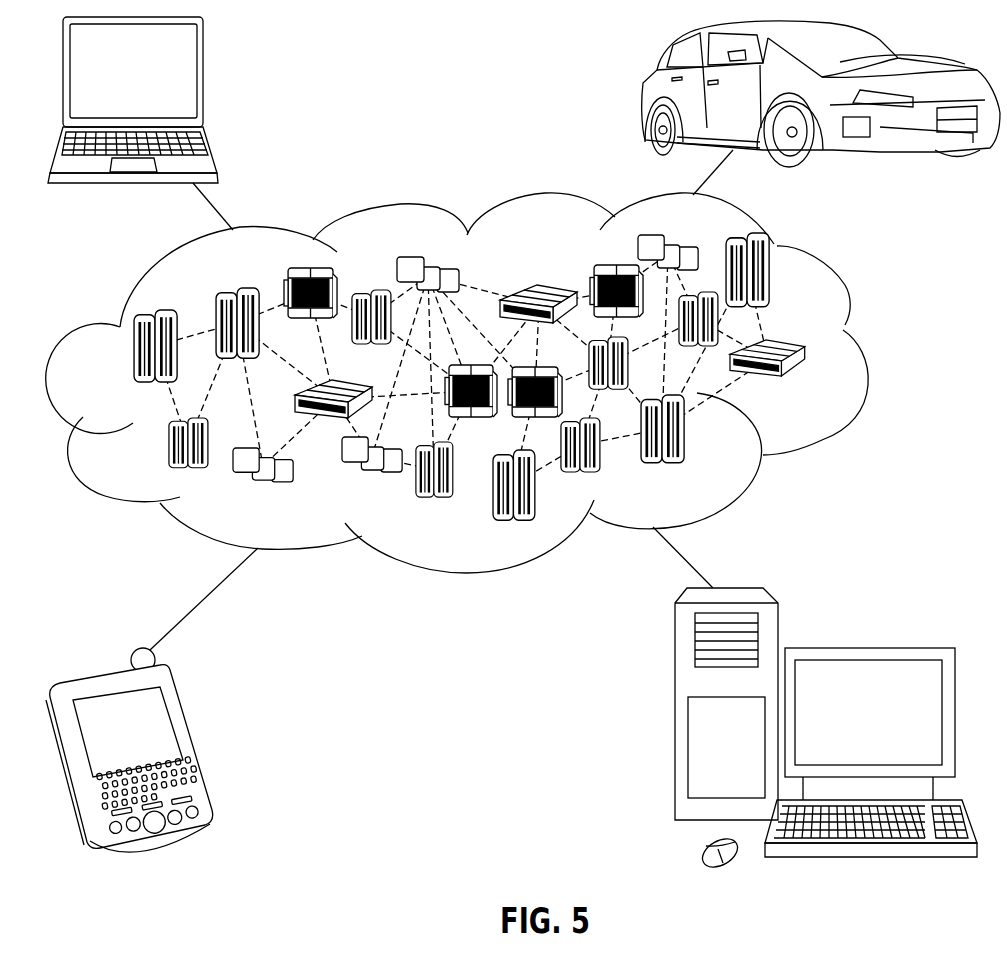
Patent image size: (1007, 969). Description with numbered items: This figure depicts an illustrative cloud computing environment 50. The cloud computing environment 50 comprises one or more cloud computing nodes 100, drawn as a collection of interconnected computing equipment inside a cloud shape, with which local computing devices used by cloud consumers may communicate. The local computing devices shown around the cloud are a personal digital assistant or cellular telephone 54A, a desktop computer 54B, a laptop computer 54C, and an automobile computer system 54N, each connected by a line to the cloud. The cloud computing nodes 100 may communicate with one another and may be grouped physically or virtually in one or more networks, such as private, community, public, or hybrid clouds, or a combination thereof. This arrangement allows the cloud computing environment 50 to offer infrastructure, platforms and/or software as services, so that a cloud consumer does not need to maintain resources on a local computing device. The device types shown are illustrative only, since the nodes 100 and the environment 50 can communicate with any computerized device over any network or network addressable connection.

The cloud computing environment 50 is at (869, 358).
The cloud computing nodes 100 is at (808, 387).
The personal digital assistant (PDA) or cellular telephone 54A is at (192, 742).
The desktop computer 54B is at (865, 648).
The laptop computer 54C is at (207, 82).
The automobile computer system 54N is at (642, 98).